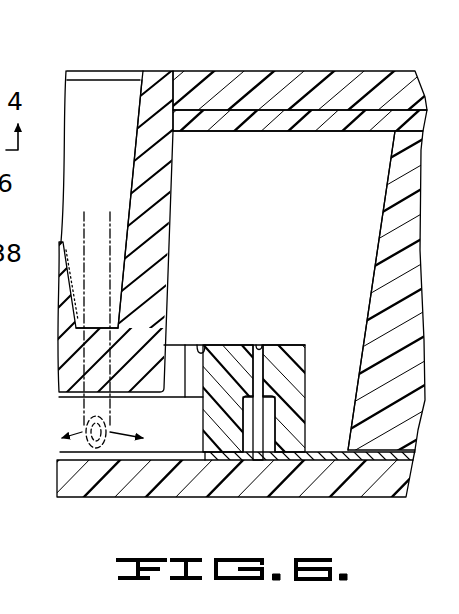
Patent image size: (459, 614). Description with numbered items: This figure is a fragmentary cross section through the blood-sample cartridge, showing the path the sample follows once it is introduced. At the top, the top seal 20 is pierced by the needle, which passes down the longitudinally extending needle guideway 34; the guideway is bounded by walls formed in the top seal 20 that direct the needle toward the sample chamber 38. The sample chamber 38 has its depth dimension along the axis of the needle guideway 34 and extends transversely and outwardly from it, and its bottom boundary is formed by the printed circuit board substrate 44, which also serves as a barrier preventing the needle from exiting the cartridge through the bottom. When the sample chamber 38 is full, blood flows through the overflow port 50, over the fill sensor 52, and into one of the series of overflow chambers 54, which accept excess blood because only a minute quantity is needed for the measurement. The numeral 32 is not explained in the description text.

The top seal 20 is at (140, 98).
The needle guideway 34 is at (116, 160).
The overflow chambers 54 is at (294, 212).
The gap 32 is at (180, 338).
The overflow port 50 is at (175, 412).
The fill sensor 52 is at (260, 347).
The sample chamber 38 is at (68, 421).
The printed circuit board substrate 44 is at (124, 494).